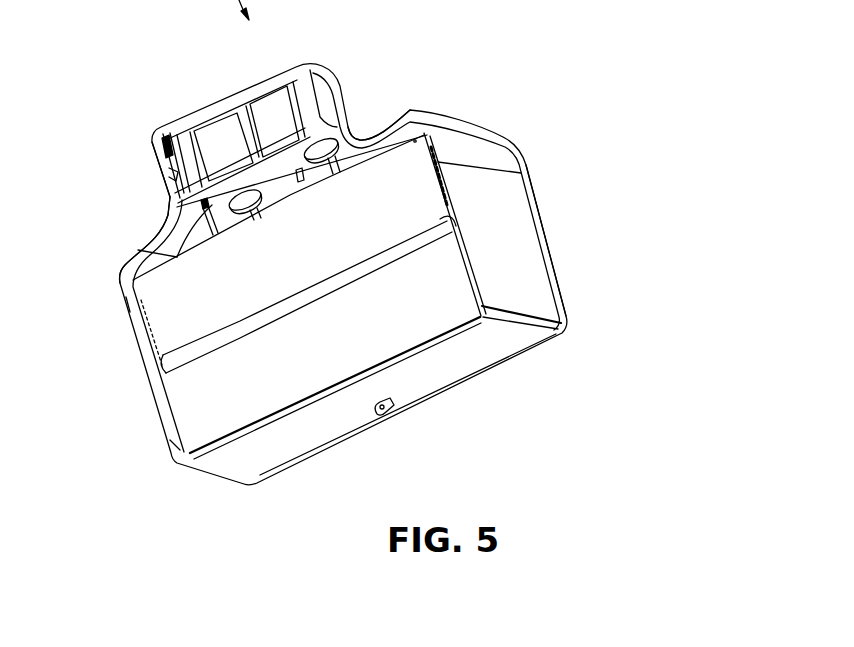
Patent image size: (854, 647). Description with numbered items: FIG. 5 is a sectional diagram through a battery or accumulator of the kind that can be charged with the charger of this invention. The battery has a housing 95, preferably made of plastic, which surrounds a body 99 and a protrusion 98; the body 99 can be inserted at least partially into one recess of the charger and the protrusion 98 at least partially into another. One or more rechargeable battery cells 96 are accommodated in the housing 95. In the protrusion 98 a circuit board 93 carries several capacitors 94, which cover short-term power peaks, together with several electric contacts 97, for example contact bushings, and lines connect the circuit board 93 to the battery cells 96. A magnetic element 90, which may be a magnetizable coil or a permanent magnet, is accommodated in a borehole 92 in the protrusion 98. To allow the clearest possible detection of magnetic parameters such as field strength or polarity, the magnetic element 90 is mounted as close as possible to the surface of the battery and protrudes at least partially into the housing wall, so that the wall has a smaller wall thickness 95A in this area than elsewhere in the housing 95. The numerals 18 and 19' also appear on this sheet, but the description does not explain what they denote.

The housing 95 is at (468, 346).
The rechargeable battery cells 96 is at (298, 262).
The body 99 is at (572, 243).
The protrusion 98 is at (354, 90).
The capacitors 94 is at (267, 110).
The electric contacts 97 is at (185, 137).
The smaller wall thickness 95A is at (163, 138).
The magnetic element 90 is at (167, 145).
The borehole 92 is at (177, 177).
The circuit board 93 is at (160, 207).
The element of previous figure 18 is at (622, 0).
The element of previous figure 19' is at (570, 10).